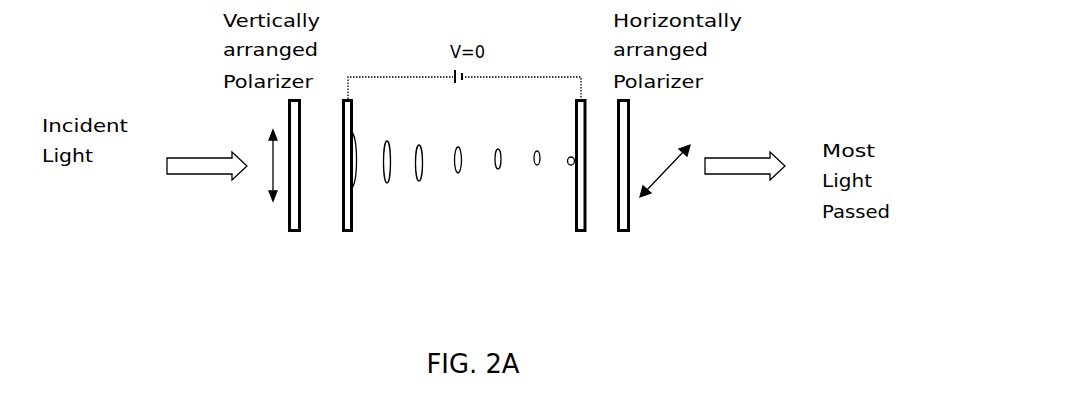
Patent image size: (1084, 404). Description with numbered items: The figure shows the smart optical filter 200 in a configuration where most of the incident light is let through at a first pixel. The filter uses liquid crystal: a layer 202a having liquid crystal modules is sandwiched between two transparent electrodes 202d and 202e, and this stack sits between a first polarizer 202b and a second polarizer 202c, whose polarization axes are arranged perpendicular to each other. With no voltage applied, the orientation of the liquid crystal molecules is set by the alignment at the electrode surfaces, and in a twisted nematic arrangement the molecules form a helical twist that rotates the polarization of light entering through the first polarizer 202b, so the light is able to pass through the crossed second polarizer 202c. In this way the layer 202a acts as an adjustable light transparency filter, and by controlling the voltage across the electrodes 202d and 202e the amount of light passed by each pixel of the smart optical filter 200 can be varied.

The smart optical filter 200 is at (550, 245).
The layer having liquid crystal modules 202a is at (475, 228).
The first polarizer 202b is at (305, 218).
The second polarizer 202c is at (630, 232).
The transparent electrode 202d is at (342, 200).
The transparent electrode 202e is at (586, 219).